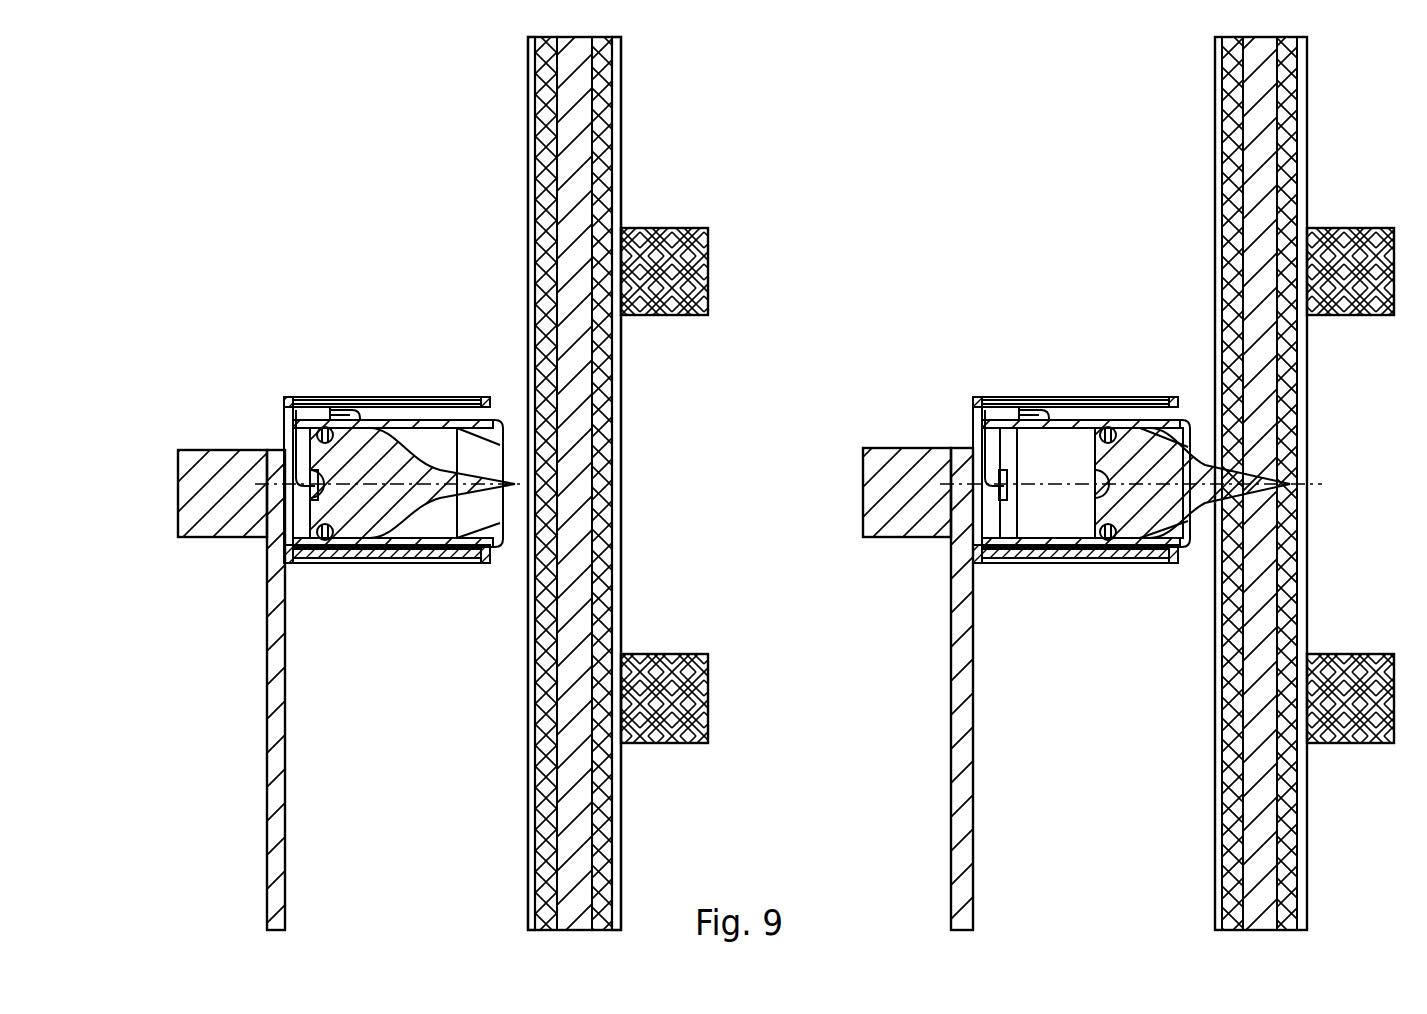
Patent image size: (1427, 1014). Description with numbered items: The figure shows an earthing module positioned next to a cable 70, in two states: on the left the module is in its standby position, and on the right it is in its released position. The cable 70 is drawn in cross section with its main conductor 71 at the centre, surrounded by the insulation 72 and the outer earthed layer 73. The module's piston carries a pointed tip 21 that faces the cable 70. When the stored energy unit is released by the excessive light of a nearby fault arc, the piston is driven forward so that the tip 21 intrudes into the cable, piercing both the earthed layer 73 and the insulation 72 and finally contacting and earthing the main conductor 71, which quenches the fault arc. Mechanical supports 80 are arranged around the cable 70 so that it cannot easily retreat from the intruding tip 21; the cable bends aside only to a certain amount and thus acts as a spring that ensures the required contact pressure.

The cable 70 is at (495, 474).
The main conductor 71 is at (582, 172).
The insulation 72 is at (547, 200).
The earthed layer 73 is at (543, 232).
The mechanical supports 80 is at (662, 265).
The tip 21 is at (513, 484).